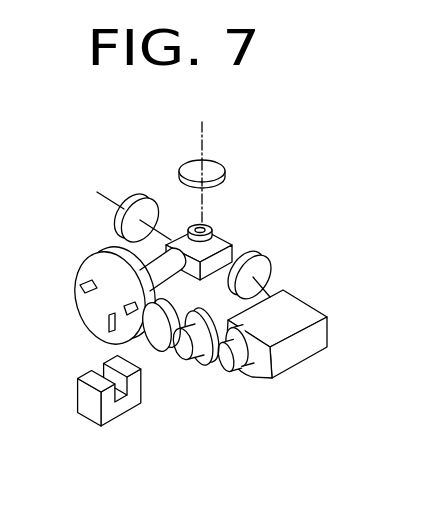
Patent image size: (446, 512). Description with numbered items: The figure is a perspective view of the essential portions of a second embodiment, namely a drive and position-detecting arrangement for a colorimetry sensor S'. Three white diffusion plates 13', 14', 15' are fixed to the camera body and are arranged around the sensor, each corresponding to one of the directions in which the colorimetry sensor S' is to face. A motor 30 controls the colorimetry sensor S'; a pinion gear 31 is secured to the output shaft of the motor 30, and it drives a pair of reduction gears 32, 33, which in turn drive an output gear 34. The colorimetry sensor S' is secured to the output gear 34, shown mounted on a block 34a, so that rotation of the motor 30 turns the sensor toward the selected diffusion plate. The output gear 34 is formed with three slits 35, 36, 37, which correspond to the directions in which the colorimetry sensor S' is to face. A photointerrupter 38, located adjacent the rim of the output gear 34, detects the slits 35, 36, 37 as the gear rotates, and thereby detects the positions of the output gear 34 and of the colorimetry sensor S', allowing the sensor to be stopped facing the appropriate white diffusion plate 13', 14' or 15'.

The white diffusion plate 13' is at (278, 275).
The white diffusion plate 14' is at (220, 174).
The white diffusion plate 15' is at (134, 192).
The colorimetry sensor S' is at (223, 210).
The motor 30 is at (311, 357).
The pinion gear 31 is at (226, 376).
The reduction gear 32 is at (195, 369).
The reduction gear 33 is at (164, 356).
The output gear 34 is at (93, 253).
The shaft support block 34a is at (232, 245).
The slit 35 is at (78, 288).
The slit 36 is at (97, 322).
The slit 37 is at (112, 338).
The photointerrupter 38 is at (85, 425).